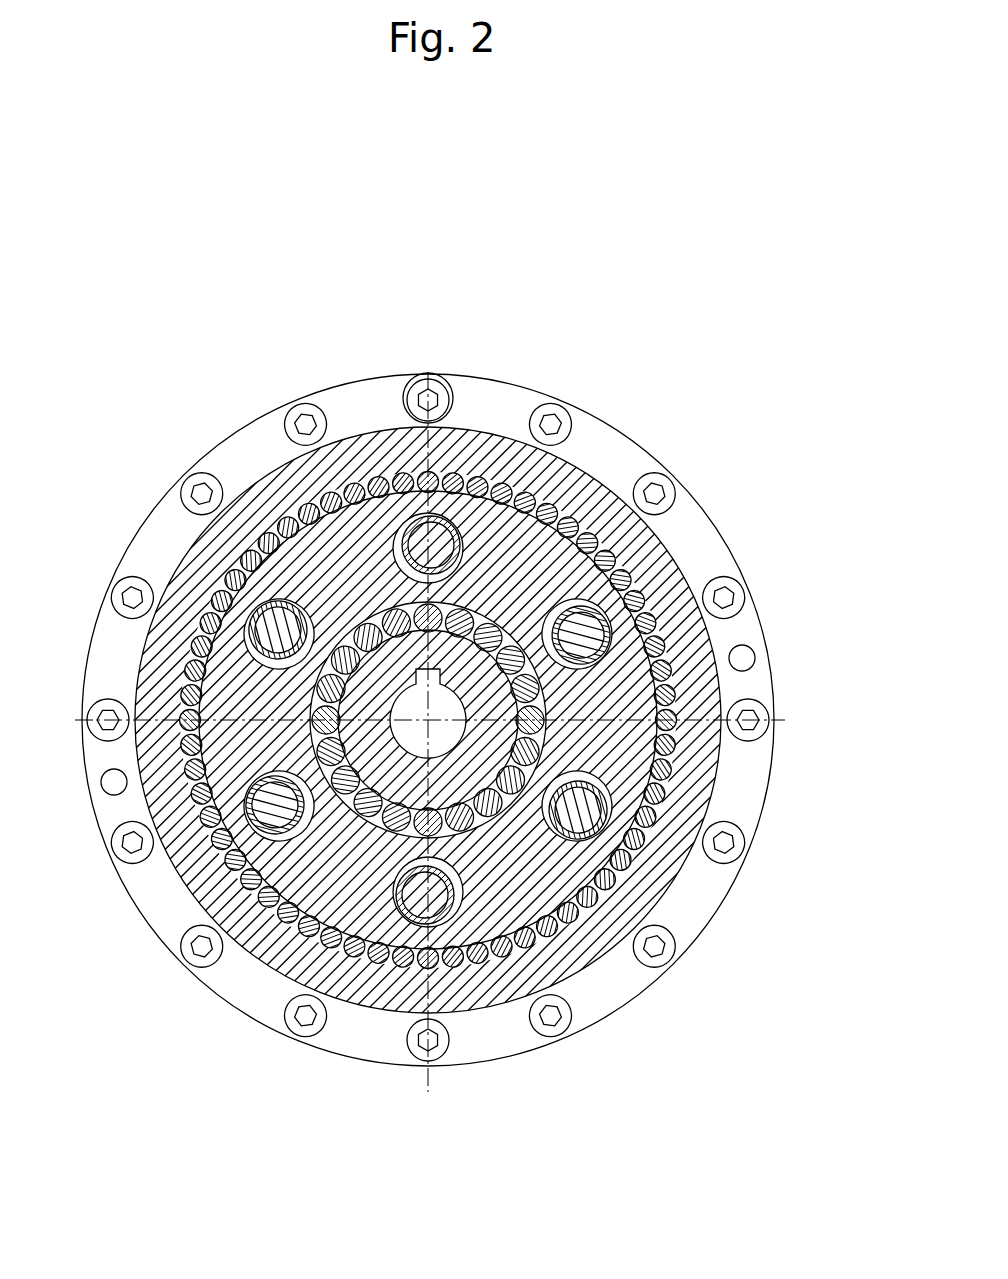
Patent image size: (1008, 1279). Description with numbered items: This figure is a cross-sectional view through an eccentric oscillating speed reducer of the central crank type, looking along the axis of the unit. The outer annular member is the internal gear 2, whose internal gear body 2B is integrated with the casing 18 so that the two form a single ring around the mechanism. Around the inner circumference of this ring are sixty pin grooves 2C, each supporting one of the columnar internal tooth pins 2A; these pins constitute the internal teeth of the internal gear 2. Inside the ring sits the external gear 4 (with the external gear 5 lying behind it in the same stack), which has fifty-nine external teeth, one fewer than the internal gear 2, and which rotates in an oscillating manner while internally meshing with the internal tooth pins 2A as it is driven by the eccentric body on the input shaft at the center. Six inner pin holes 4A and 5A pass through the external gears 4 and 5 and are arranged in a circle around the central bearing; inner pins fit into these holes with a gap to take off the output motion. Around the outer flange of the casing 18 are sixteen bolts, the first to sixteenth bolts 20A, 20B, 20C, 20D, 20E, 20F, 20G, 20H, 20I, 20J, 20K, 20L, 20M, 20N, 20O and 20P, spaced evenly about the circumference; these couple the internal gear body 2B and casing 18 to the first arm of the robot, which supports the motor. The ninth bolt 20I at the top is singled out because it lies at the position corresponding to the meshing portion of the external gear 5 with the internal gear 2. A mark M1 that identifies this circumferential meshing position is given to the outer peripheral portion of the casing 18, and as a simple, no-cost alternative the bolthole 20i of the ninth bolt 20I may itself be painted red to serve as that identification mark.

The internal gear 2 is at (504, 639).
The internal tooth pins 2A is at (634, 575).
The internal gear body 2B is at (459, 720).
The casing 18 is at (698, 692).
The pin grooves 2C is at (583, 520).
The external gear 4 is at (504, 720).
The external gear 5 is at (666, 668).
The inner pin holes 4A is at (458, 764).
The inner pin holes 5A is at (581, 845).
The first bolt 20A is at (428, 1042).
The second bolt 20B is at (306, 1018).
The third bolt 20C is at (202, 948).
The fourth bolt 20D is at (130, 849).
The fifth bolt 20E is at (103, 716).
The sixth bolt 20F is at (130, 598).
The seventh bolt 20G is at (200, 492).
The eighth bolt 20H is at (303, 420).
The ninth bolt 20I is at (470, 368).
The bolthole 20i is at (470, 368).
The mark M1 is at (452, 402).
The tenth bolt 20J is at (553, 422).
The eleventh bolt 20K is at (658, 492).
The twelfth bolt 20L is at (726, 596).
The thirteenth bolt 20M is at (750, 724).
The fourteenth bolt 20N is at (726, 842).
The fifteenth bolt 20O is at (660, 946).
The sixteenth bolt 20P is at (553, 1016).